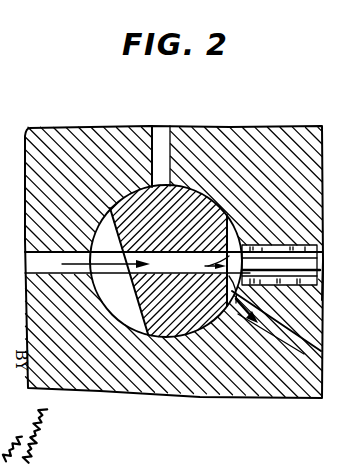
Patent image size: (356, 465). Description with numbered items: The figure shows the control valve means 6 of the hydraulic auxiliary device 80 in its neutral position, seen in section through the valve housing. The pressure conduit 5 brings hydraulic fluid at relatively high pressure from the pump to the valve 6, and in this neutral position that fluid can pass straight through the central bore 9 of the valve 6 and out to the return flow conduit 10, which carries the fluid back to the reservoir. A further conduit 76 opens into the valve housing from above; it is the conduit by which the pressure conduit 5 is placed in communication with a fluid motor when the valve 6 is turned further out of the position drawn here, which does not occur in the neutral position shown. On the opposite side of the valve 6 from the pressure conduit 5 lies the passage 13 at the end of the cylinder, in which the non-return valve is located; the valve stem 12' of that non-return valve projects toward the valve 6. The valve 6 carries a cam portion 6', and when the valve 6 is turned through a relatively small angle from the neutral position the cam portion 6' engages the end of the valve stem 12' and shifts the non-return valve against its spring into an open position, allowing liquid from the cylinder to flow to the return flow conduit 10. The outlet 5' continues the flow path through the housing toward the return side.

The auxiliary device 80 is at (248, 113).
The conduit 76 is at (161, 127).
The pressure conduit 5 is at (75, 264).
The outlet passage 5' is at (299, 270).
The control valve means 6 is at (166, 305).
The cam portion 6' is at (276, 239).
The central bore 9 is at (157, 275).
The return flow conduit 10 is at (302, 352).
The valve stem 12' is at (299, 255).
The passage 13 is at (320, 279).